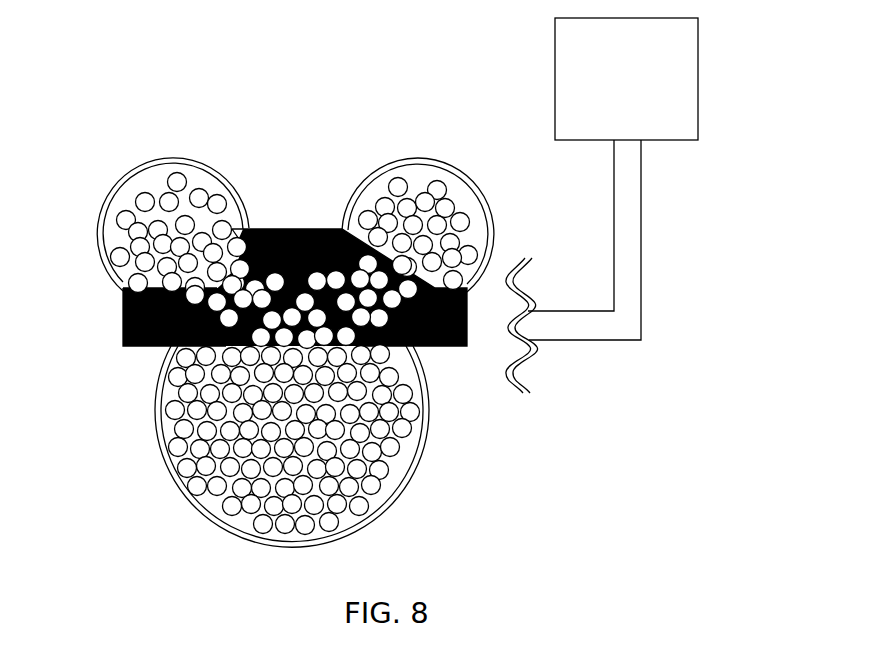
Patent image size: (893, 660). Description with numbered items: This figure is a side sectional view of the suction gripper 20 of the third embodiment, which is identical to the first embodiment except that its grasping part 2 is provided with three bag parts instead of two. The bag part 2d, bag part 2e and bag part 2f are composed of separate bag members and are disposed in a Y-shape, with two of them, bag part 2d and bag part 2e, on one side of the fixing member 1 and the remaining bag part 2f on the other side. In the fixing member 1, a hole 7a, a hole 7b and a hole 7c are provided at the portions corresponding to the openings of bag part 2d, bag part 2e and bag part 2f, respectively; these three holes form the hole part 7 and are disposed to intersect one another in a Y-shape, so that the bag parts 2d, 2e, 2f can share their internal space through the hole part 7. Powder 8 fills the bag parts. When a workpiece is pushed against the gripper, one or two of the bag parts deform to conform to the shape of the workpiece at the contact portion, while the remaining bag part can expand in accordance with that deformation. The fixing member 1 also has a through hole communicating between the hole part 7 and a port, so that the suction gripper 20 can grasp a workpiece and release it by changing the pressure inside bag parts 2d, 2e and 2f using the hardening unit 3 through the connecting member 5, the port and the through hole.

The suction gripper 20 is at (93, 98).
The grasping part 2 is at (128, 398).
The bag part 2d is at (182, 160).
The bag part 2e is at (437, 160).
The bag part 2f is at (418, 465).
The fixing member 1 is at (463, 346).
The hardening unit 3 is at (699, 110).
The connecting member 5 is at (642, 236).
The hole part 7 is at (294, 350).
The hole 7a is at (242, 240).
The hole 7b is at (323, 270).
The hole 7c is at (355, 335).
The powder 8 is at (198, 503).